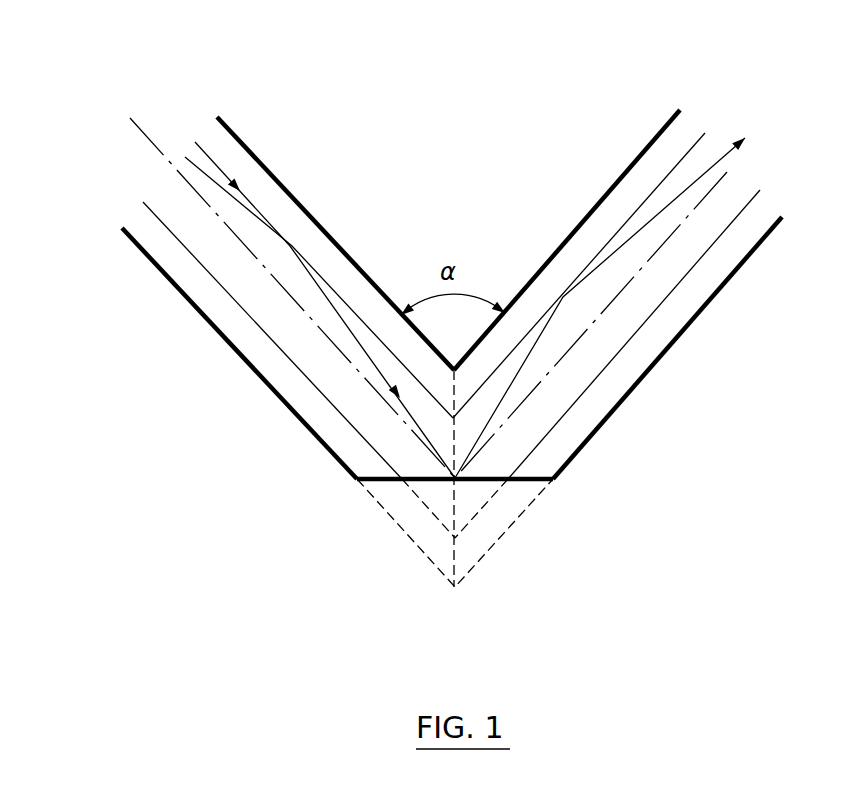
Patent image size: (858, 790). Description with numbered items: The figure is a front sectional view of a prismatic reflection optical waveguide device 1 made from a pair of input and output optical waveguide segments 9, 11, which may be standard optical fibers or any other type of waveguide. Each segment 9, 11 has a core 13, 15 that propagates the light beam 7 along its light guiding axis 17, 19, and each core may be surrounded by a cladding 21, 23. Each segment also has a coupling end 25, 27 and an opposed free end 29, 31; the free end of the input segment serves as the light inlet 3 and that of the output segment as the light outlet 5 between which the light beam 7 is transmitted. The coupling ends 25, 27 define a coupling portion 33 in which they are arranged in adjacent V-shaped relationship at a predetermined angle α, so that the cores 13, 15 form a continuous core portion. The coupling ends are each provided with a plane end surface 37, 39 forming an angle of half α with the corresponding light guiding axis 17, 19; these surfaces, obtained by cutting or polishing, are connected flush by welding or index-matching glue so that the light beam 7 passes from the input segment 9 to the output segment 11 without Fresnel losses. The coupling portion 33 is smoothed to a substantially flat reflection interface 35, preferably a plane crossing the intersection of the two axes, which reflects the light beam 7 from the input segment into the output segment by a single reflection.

The prismatic reflection optical waveguide device 1 is at (387, 57).
The light inlet 3 is at (158, 188).
The light outlet 5 is at (752, 181).
The light beam 7 is at (180, 180).
The input optical waveguide segment 9 is at (181, 381).
The output optical waveguide segment 11 is at (711, 364).
The core 13 is at (193, 236).
The core 15 is at (720, 217).
The light guiding axis 17 is at (184, 184).
The light guiding axis 19 is at (727, 172).
The cladding 21 is at (200, 308).
The cladding 23 is at (715, 283).
The coupling end 25 is at (440, 388).
The coupling end 27 is at (482, 388).
The free end 29 is at (201, 116).
The free end 31 is at (712, 121).
The coupling portion 33 is at (491, 522).
The reflection interface 35 is at (423, 482).
The end surface 37 is at (451, 452).
The end surface 39 is at (458, 438).